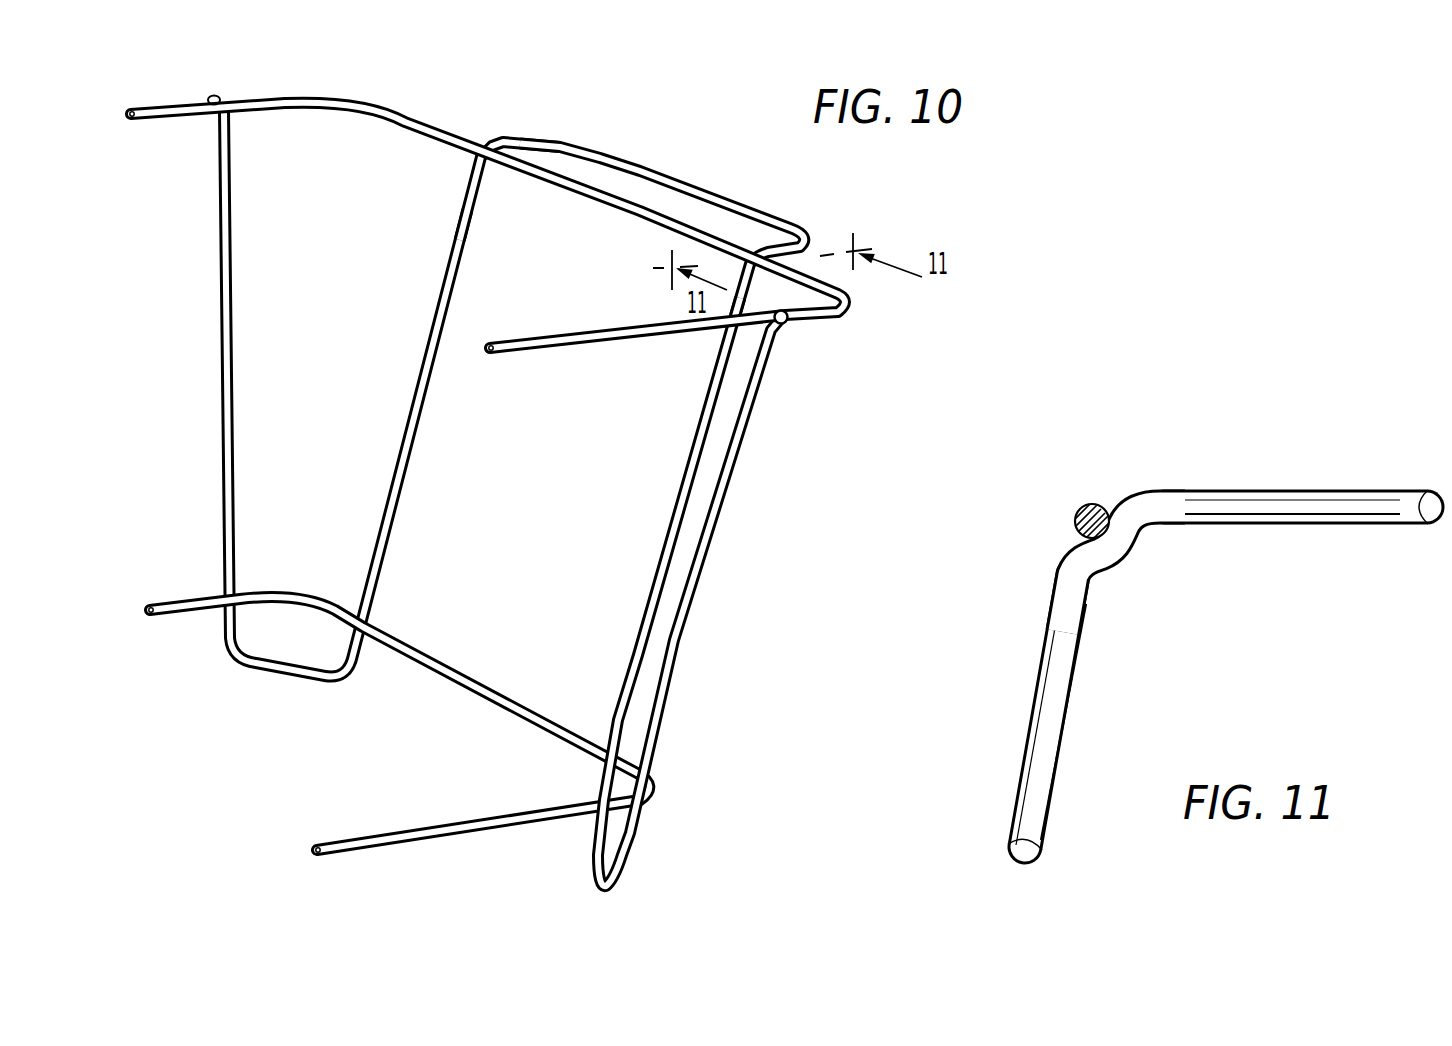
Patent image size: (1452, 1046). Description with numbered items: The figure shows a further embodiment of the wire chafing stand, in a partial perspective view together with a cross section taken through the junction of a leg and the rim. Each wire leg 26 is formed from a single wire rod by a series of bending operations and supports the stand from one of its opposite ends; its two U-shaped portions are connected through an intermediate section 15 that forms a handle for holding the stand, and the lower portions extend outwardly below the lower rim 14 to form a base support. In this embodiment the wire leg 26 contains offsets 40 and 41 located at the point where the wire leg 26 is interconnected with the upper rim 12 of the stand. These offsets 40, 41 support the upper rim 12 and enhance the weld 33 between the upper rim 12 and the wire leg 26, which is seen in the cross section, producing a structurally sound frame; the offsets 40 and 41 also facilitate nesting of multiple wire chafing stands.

In FIG. 10, the upper rim 12 is at (291, 98).
In FIG. 10, the lower rim 14 is at (484, 684).
In FIG. 10, the intermediate section 15 is at (709, 188).
In FIG. 11, the intermediate section 15 is at (1422, 490).
In FIG. 10, the wire leg 26 is at (682, 427).
In FIG. 11, the wire leg 26 is at (1015, 725).
In FIG. 11, the weld 33 is at (1100, 504).
In FIG. 10, the offset 40 is at (493, 138).
In FIG. 11, the offset 40 is at (1122, 565).
In FIG. 10, the offset 41 is at (782, 326).